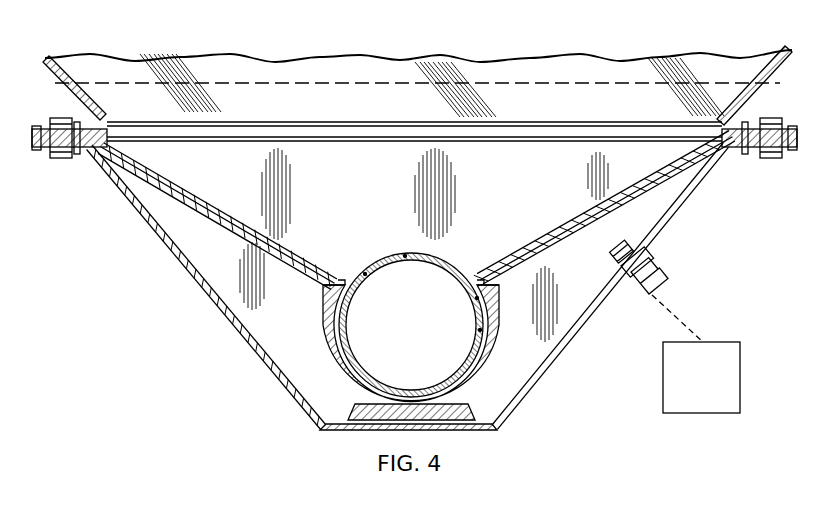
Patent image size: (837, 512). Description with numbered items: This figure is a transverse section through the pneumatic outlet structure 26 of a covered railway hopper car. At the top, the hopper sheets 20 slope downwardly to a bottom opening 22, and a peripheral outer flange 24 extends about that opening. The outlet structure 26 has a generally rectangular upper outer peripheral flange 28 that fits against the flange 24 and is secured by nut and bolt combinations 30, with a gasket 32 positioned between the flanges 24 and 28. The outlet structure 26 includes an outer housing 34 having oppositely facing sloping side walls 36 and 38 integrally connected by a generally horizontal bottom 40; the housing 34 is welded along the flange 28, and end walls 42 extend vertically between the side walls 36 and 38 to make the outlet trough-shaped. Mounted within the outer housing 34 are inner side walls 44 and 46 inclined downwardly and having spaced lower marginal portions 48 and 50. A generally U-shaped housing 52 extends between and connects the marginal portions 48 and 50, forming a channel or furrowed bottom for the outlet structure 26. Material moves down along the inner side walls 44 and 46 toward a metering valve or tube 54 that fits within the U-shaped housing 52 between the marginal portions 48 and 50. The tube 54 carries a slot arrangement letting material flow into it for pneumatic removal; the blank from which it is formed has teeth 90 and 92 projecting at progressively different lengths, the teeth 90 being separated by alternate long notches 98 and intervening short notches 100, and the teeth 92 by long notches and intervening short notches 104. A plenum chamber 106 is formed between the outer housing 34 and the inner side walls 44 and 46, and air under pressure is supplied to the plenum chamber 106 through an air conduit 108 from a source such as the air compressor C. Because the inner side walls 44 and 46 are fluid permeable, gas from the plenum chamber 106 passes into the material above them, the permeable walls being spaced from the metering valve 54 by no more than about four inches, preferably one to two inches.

The hopper sheets 20 is at (52, 71).
The bottom opening 22 is at (371, 130).
The peripheral outer flange 24 is at (38, 128).
The outlet structure 26 is at (206, 287).
The upper outer peripheral flange 28 is at (42, 152).
The nut and bolt combinations 30 is at (55, 158).
The gasket 32 is at (76, 150).
The outer housing 34 is at (163, 240).
The sloping side wall 36 is at (272, 365).
The sloping side wall 38 is at (562, 349).
The bottom 40 is at (472, 433).
The end walls 42 is at (493, 200).
The inner side wall 44 is at (201, 195).
The inner side wall 46 is at (568, 221).
The marginal portion 48 is at (339, 281).
The marginal portion 50 is at (483, 279).
The U-shaped housing 52 is at (322, 317).
The metering valve 54 is at (452, 377).
The teeth 90 is at (449, 267).
The teeth 92 is at (477, 298).
The long notches 98 is at (366, 275).
The short notches 100 is at (405, 257).
The short notches 104 is at (480, 330).
The plenum chamber 106 is at (218, 248).
The air conduit 108 is at (650, 283).